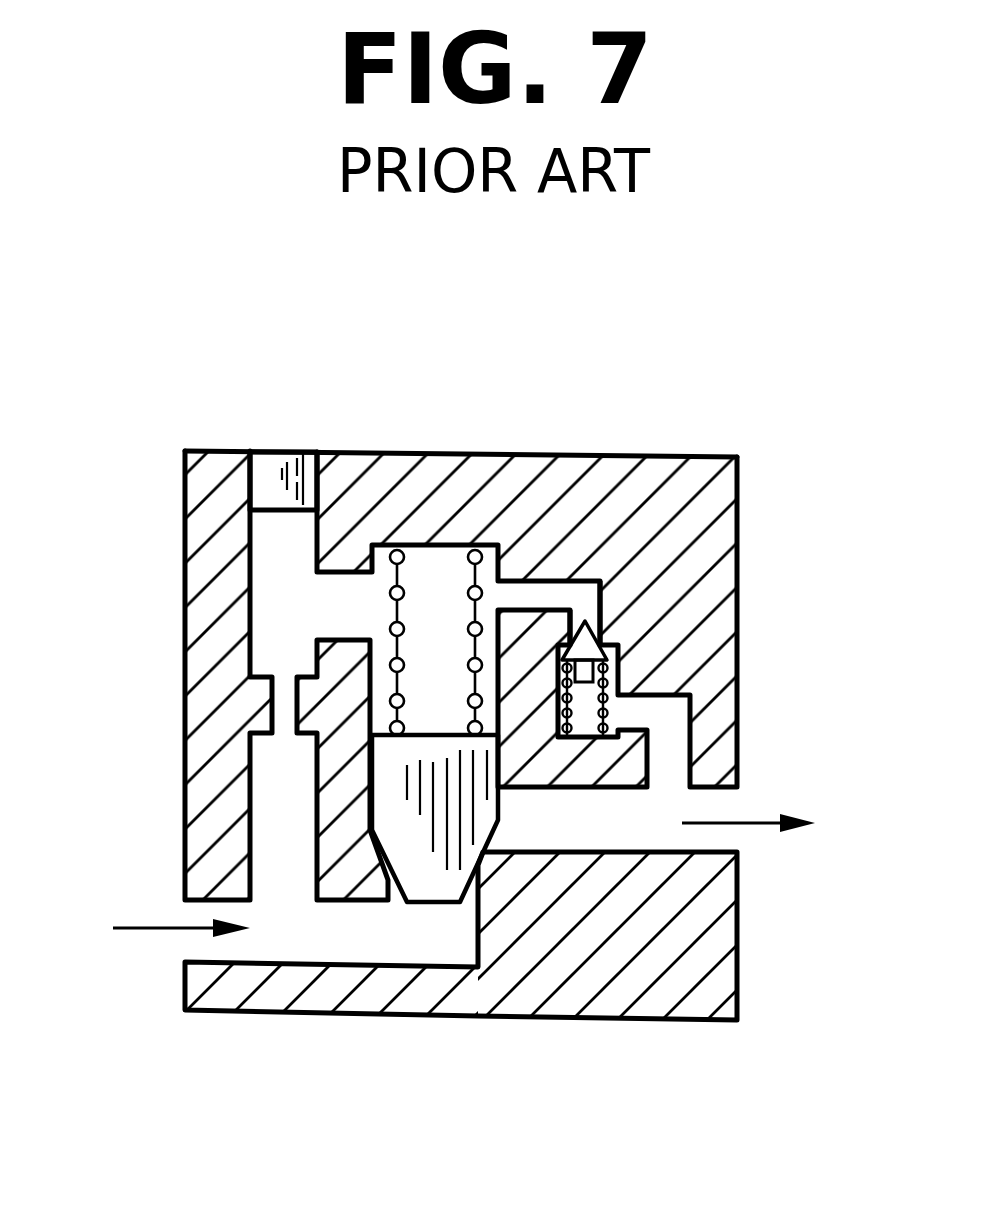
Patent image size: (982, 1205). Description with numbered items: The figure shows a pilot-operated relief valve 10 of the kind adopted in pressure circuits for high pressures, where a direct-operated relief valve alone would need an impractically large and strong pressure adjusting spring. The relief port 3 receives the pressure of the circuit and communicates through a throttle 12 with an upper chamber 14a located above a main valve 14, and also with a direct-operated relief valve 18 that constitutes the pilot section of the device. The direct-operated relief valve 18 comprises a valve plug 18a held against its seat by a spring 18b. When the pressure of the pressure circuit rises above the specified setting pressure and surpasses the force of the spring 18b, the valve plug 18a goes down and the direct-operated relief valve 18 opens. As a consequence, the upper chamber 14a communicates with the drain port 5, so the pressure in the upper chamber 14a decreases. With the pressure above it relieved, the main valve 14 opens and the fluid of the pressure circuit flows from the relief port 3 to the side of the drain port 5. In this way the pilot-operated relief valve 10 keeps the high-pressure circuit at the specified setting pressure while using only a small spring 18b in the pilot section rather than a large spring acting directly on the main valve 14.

The pilot-operated relief valve 10 is at (445, 440).
The throttle 12 is at (268, 715).
The main valve 14 is at (425, 877).
The upper chamber 14a is at (435, 633).
The direct-operated relief valve 18 is at (620, 640).
The valve plug 18a is at (602, 580).
The spring 18b is at (607, 723).
The relief port 3 is at (205, 903).
The drain port 5 is at (703, 856).